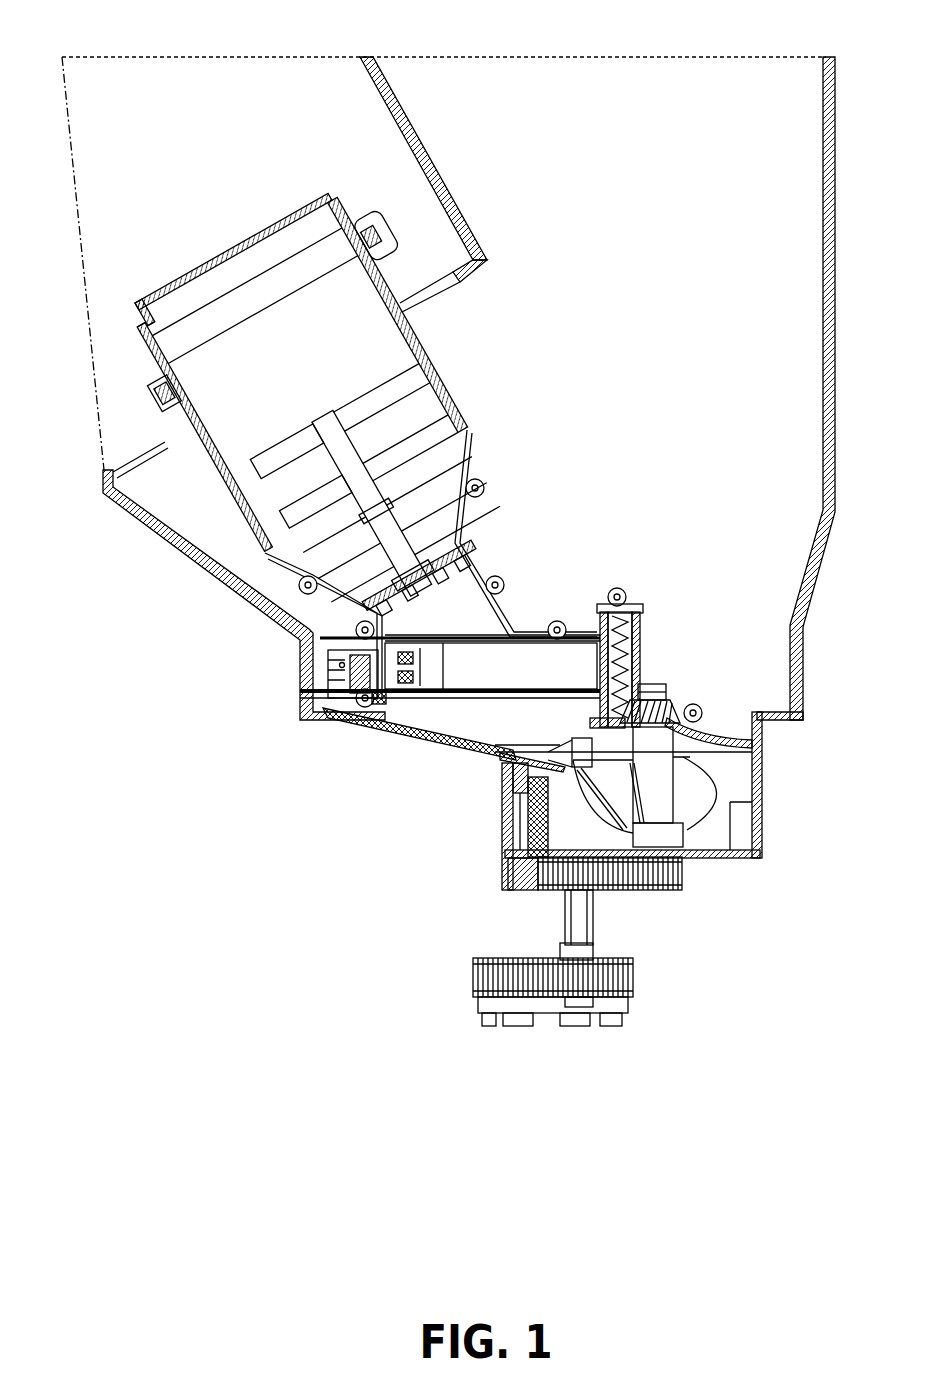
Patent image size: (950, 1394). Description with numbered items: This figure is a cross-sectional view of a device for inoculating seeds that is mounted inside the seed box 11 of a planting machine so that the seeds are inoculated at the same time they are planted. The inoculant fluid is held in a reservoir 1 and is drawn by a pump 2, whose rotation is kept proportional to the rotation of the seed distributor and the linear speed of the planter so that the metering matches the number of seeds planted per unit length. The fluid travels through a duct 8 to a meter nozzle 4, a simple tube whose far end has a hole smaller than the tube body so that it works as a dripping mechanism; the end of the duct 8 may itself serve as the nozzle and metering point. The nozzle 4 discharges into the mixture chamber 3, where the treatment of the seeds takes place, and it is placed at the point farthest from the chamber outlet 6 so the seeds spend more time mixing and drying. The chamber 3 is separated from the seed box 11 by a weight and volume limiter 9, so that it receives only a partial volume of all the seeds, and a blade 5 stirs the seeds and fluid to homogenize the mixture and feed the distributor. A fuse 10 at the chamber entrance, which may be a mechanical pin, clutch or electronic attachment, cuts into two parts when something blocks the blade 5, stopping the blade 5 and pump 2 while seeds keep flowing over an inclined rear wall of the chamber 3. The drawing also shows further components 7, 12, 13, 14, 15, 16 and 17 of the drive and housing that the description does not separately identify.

The reservoir 1 is at (472, 426).
The pump 2 is at (385, 676).
The mixture chamber 3 is at (736, 793).
The meter nozzle 4 is at (573, 765).
The blade 5 is at (692, 793).
The mixture chamber outlet 6 is at (706, 836).
The motor shaft 7 is at (348, 431).
The duct 8 is at (378, 699).
The weight and volume limiter 9 is at (706, 735).
The fuse 10 is at (660, 687).
The seed box 11 is at (668, 136).
The motor housing 12 is at (262, 222).
The lower gear 13 is at (625, 1009).
The shaft 14 is at (586, 905).
The gear 15 is at (684, 889).
The bevel gear 16 is at (639, 683).
The gearbox 17 is at (479, 671).